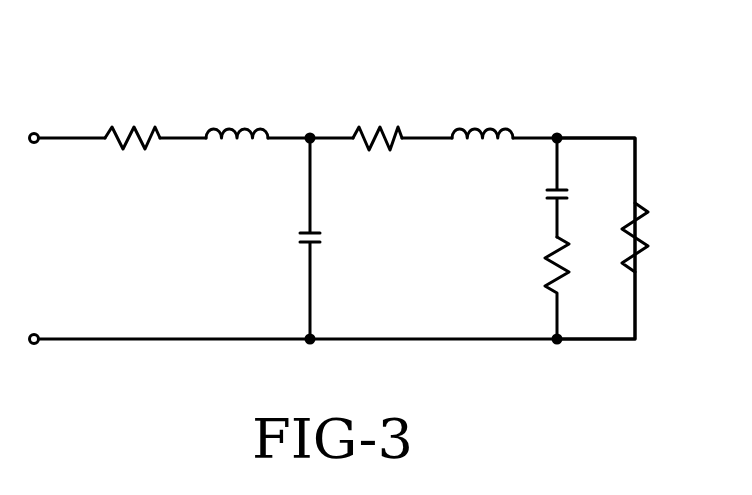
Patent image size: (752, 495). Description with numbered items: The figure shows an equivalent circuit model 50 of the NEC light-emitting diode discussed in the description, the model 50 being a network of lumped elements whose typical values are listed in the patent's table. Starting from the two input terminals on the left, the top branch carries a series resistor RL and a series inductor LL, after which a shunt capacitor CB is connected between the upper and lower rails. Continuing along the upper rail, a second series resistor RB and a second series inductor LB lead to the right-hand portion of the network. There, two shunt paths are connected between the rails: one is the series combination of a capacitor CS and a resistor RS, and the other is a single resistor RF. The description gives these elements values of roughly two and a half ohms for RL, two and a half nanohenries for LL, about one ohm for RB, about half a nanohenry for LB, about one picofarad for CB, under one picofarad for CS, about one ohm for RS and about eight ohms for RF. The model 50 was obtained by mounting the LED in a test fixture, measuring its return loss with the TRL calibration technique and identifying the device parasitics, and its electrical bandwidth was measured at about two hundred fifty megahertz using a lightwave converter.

The equivalent circuit model 50 is at (652, 112).
The lead resistance RL is at (133, 128).
The lead inductance LL is at (230, 130).
The bond resistance RB is at (380, 125).
The bond inductance LB is at (473, 127).
The bond capacitance CB is at (300, 234).
The series capacitance CS is at (547, 197).
The series resistance RS is at (548, 275).
The forward resistance RF is at (648, 240).